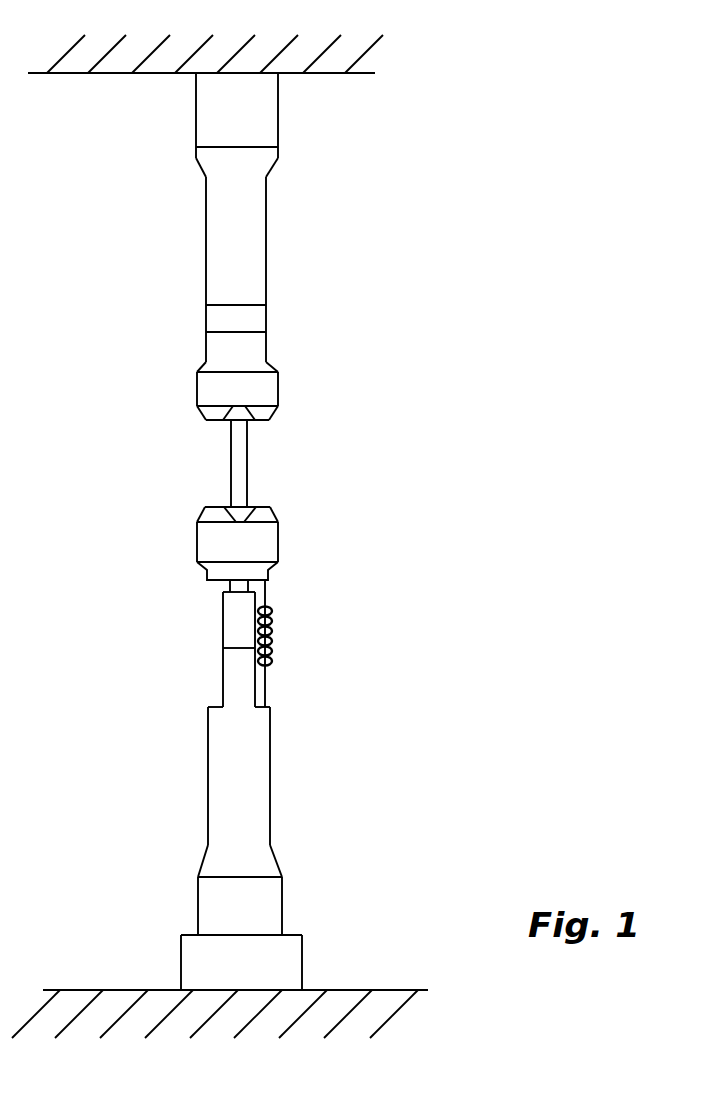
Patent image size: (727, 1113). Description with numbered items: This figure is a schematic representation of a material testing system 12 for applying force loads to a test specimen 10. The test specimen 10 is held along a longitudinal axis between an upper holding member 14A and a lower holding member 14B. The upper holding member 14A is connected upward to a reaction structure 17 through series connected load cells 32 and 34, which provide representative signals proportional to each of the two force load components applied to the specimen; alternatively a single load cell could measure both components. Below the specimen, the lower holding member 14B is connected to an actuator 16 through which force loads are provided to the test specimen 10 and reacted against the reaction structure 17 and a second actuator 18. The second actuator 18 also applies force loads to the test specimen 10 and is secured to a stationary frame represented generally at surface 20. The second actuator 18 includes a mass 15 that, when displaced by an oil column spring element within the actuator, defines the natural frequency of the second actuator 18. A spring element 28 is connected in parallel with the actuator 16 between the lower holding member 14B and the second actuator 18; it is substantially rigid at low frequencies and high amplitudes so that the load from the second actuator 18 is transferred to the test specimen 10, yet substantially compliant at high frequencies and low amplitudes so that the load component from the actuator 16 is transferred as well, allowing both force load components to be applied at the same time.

The test specimen 10 is at (242, 473).
The material testing system 12 is at (338, 350).
The upper holding member 14A is at (197, 385).
The lower holding member 14B is at (188, 543).
The mass 15 is at (270, 772).
The actuator 16 is at (223, 618).
The reaction structure 17 is at (360, 76).
The second actuator 18 is at (175, 902).
The surface 20 is at (387, 990).
The spring element 28 is at (273, 637).
The load cell 32 is at (266, 317).
The load cell 34 is at (278, 117).